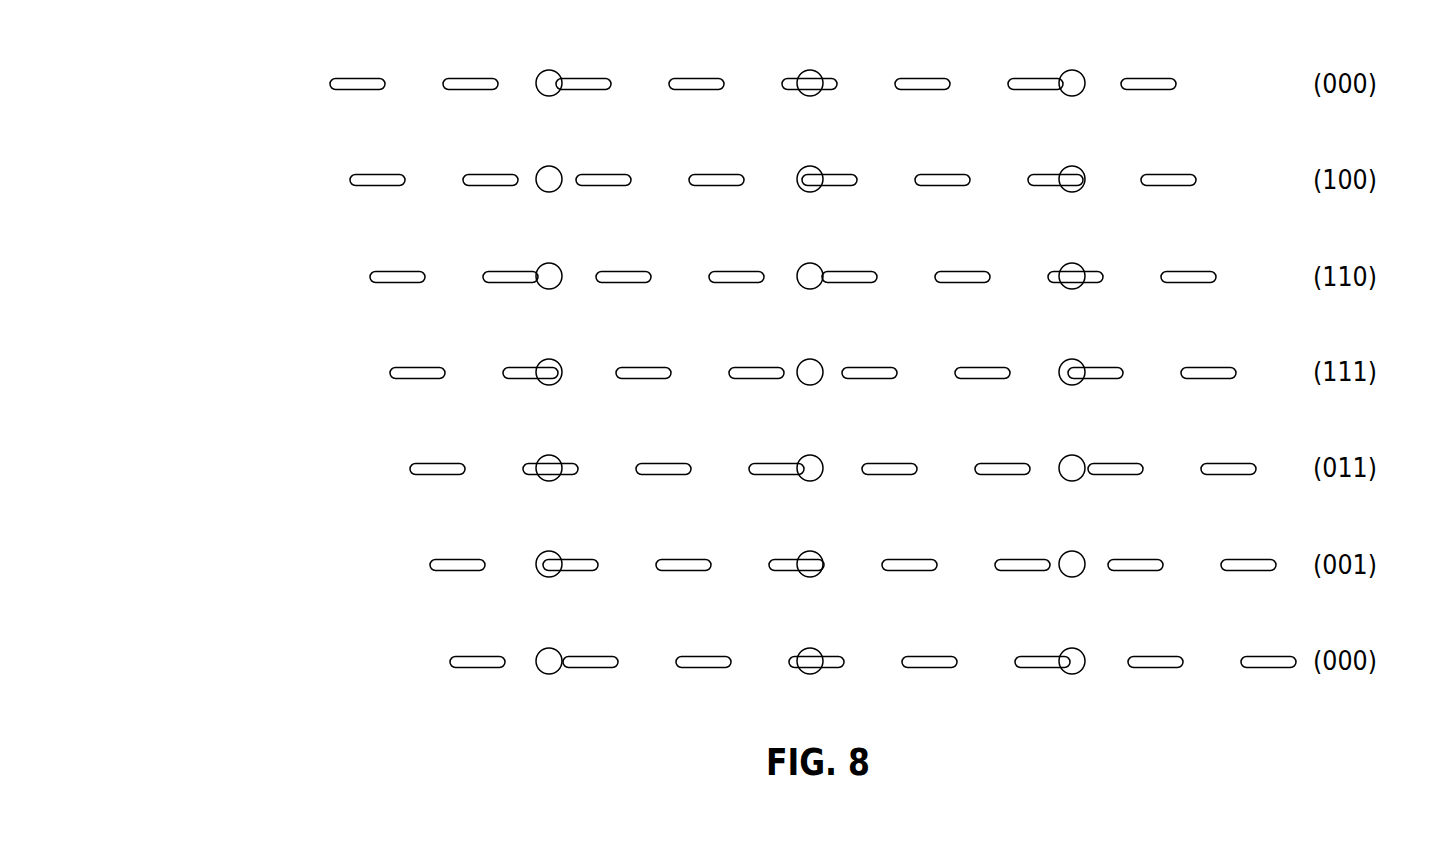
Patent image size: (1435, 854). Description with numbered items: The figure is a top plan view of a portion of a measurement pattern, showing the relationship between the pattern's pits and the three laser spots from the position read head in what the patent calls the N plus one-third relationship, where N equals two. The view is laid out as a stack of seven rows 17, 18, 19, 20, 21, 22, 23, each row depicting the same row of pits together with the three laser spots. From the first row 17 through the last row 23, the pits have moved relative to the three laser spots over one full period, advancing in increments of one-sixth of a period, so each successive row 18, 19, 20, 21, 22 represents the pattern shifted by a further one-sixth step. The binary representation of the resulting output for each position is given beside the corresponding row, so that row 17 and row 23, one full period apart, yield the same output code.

The first state row of the display matrix (000) 17 is at (318, 81).
The second state row of the display matrix (100) 18 is at (338, 184).
The third state row of the display matrix (110) 19 is at (353, 280).
The fourth state row of the display matrix (111) 20 is at (377, 377).
The fifth state row of the display matrix (011) 21 is at (395, 475).
The sixth state row of the display matrix (001) 22 is at (417, 572).
The seventh state row of the display matrix (000) 23 is at (442, 664).